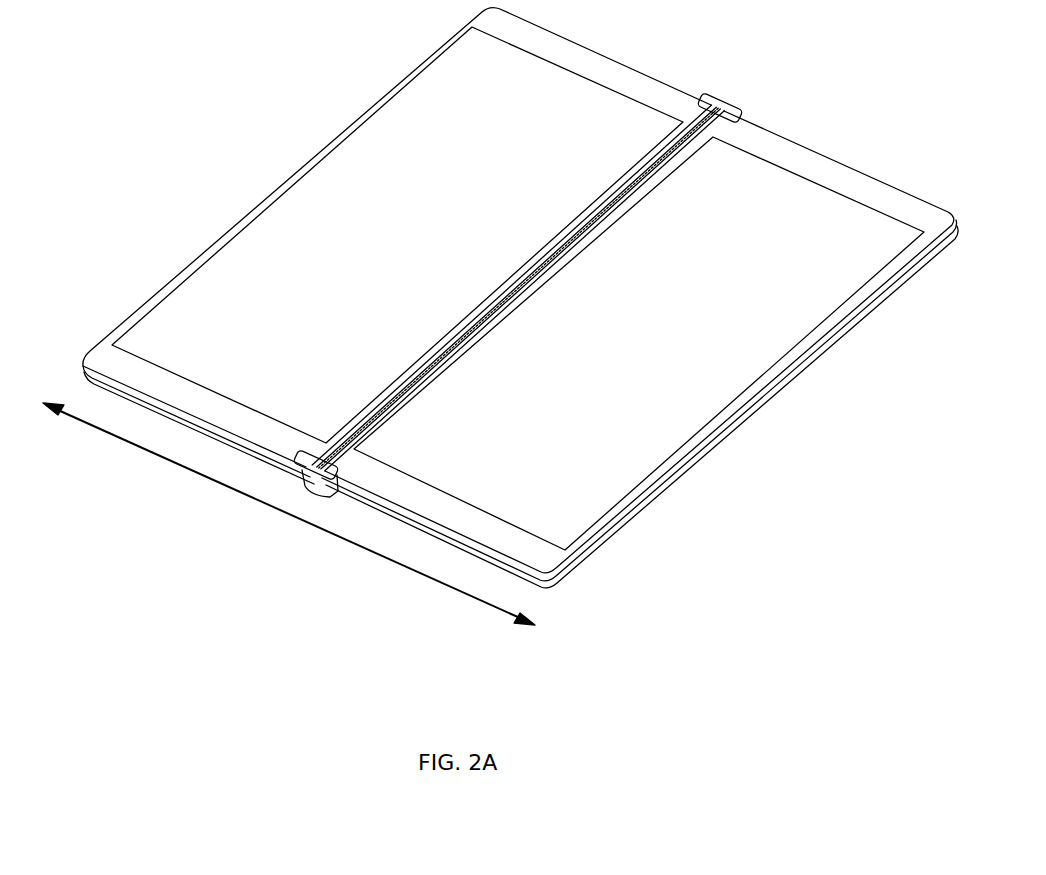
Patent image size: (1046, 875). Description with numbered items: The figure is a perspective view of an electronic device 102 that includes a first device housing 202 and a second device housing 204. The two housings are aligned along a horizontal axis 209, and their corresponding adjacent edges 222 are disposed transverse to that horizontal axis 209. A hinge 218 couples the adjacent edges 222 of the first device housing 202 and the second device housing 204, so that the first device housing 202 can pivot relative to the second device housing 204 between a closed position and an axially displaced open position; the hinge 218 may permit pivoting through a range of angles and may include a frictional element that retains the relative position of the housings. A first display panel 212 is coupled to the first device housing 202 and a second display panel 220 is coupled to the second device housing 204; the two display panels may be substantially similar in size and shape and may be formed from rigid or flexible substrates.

The electronic device 102 is at (222, 146).
The first device housing 202 is at (580, 63).
The second device housing 204 is at (832, 170).
The first display panel 212 is at (402, 122).
The second display panel 220 is at (818, 292).
The hinge 218 is at (722, 101).
The adjacent edges 222 is at (483, 318).
The horizontal axis 209 is at (153, 452).